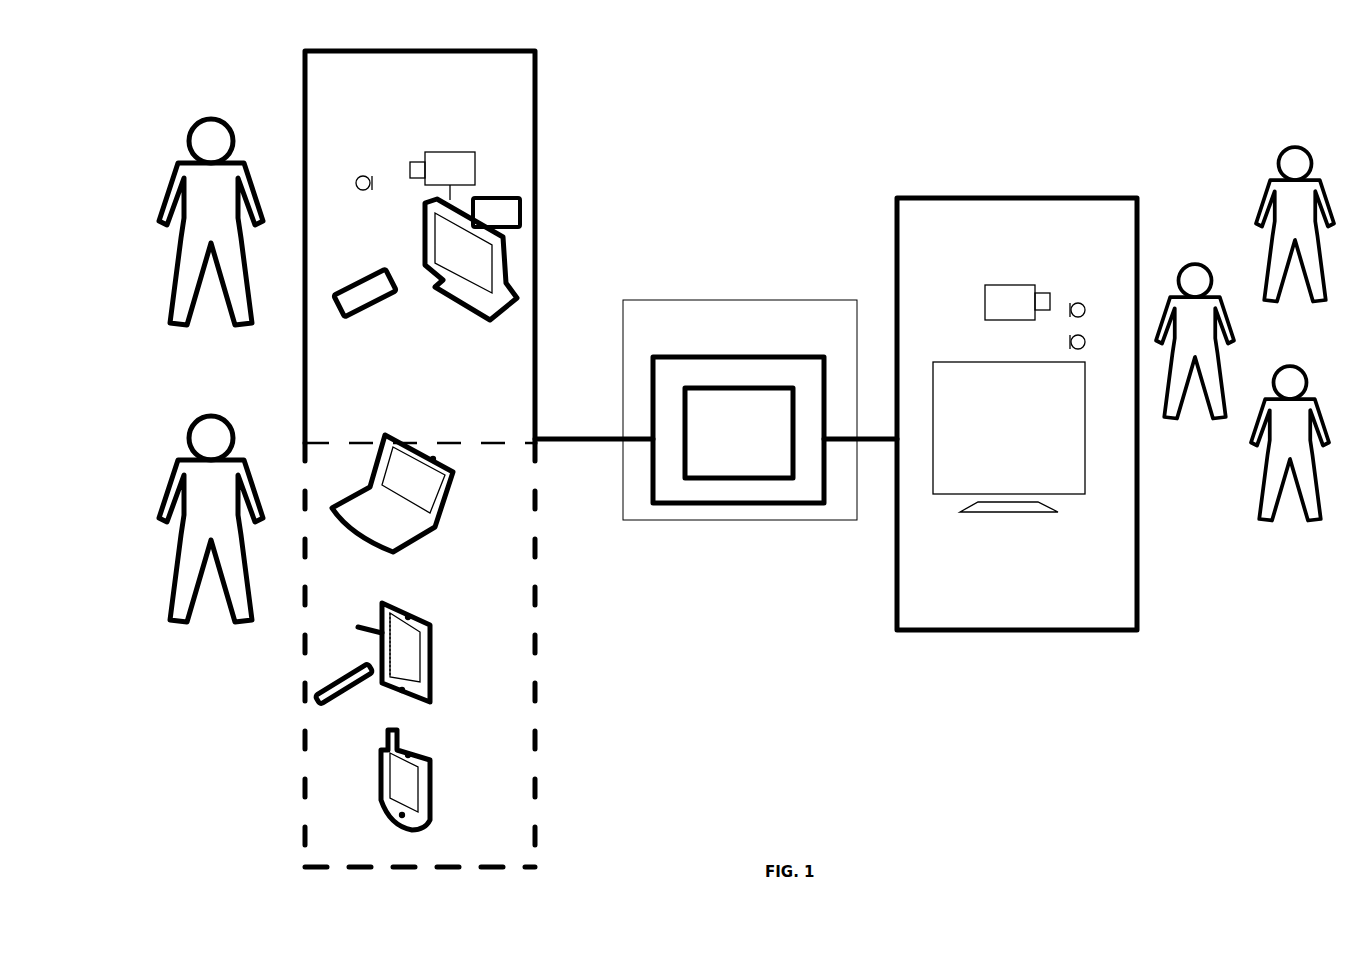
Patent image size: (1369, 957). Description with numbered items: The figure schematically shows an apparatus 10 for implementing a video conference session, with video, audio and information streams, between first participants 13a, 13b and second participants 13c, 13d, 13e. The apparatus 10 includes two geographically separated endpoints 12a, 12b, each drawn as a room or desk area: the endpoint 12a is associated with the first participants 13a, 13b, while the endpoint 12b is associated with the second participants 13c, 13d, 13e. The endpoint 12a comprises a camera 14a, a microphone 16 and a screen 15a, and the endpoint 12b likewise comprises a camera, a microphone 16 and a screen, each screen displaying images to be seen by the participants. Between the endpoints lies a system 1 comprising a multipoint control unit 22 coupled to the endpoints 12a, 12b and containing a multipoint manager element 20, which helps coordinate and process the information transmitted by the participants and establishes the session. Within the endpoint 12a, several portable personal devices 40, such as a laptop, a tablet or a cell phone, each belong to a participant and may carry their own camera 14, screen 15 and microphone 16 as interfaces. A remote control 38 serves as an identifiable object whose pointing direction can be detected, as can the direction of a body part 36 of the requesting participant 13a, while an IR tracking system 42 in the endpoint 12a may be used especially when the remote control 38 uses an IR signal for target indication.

The system 1 is at (692, 298).
The apparatus 10 is at (842, 126).
The endpoint 12a is at (524, 150).
The endpoint 12b is at (983, 216).
The first participant 13a is at (211, 131).
The first participant 13b is at (212, 420).
The second participant 13c is at (1278, 470).
The second participant 13d is at (1193, 315).
The second participant 13e is at (1293, 193).
The camera 14 is at (440, 460).
The camera 14a is at (475, 170).
The screen 15 is at (433, 500).
The screen 15a is at (487, 270).
The microphone 16 is at (355, 178).
The multipoint manager element 20 is at (739, 433).
The multipoint control unit (MCU) 22 is at (743, 372).
The body part 36 is at (205, 144).
The remote control 38 is at (380, 320).
The portable personal device 40 is at (405, 530).
The IR tracking system 42 is at (496, 212).